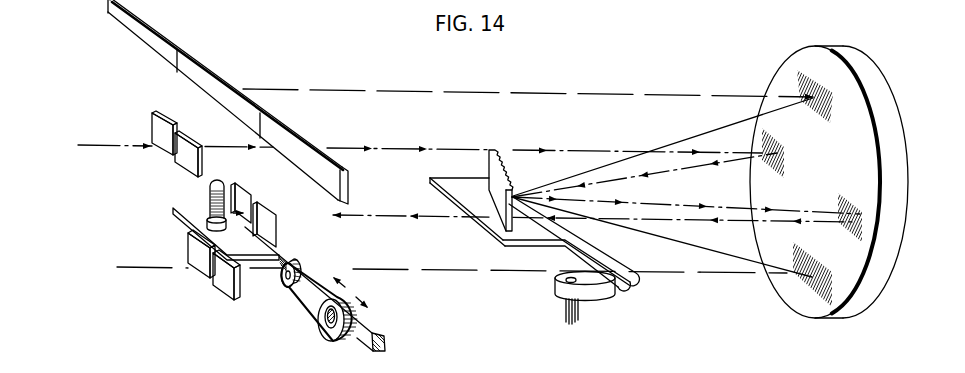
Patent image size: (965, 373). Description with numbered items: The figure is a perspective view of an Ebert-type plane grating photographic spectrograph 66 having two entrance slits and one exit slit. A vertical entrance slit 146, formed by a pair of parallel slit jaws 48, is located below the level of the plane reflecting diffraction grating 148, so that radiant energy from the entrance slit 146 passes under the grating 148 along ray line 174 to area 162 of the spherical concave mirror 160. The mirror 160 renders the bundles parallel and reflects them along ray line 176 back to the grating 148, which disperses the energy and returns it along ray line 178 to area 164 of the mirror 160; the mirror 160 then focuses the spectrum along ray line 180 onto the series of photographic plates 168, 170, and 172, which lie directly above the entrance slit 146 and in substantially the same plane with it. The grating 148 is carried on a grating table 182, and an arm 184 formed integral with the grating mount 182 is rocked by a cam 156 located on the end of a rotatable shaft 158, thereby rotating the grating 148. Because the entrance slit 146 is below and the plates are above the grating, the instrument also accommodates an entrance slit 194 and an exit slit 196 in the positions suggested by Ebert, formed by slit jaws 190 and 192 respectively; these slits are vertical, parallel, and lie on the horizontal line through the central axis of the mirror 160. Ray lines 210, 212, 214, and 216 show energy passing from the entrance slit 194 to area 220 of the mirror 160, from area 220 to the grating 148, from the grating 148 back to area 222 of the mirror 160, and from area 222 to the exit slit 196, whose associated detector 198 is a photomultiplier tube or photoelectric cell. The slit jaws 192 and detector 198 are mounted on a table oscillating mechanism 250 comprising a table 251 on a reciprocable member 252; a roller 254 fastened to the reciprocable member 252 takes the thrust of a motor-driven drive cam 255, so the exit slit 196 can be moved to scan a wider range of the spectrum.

The slit jaws 48 is at (222, 285).
The spectrograph 66 is at (715, 280).
The entrance slit 146 is at (207, 278).
The diffraction grating 148 is at (505, 190).
The cam 156 is at (593, 300).
The rotatable shaft 158 is at (578, 318).
The spherical concave mirror 160 is at (887, 117).
The mirror area 162 is at (820, 290).
The mirror area 164 is at (803, 86).
The photographic plate 168 is at (156, 36).
The photographic plate 170 is at (208, 73).
The photographic plate 172 is at (303, 148).
The ray line 174 is at (449, 271).
The ray line 176 is at (688, 243).
The ray line 178 is at (703, 133).
The ray line 180 is at (672, 94).
The grating table 182 is at (523, 232).
The arm 184 is at (612, 263).
The slit jaws 190 is at (152, 128).
The slit jaws 192 is at (251, 188).
The entrance slit 194 is at (176, 132).
The exit slit 196 is at (257, 204).
The detector 198 is at (210, 196).
The ray line 210 is at (415, 147).
The ray line 212 is at (680, 171).
The ray line 214 is at (700, 208).
The ray line 216 is at (727, 222).
The mirror area 220 is at (784, 146).
The mirror area 222 is at (862, 212).
The table oscillating mechanism 250 is at (301, 241).
The table 251 is at (248, 243).
The reciprocable member 252 is at (316, 270).
The roller 254 is at (292, 288).
The drive cam 255 is at (309, 306).